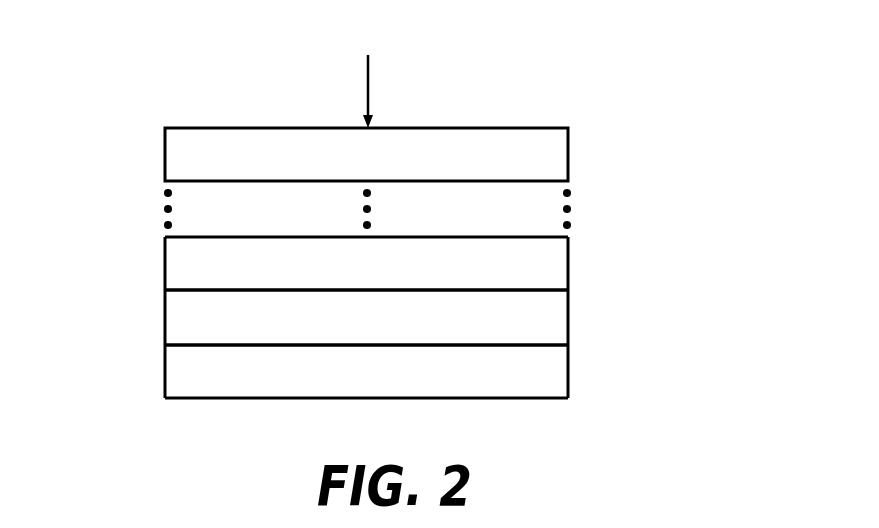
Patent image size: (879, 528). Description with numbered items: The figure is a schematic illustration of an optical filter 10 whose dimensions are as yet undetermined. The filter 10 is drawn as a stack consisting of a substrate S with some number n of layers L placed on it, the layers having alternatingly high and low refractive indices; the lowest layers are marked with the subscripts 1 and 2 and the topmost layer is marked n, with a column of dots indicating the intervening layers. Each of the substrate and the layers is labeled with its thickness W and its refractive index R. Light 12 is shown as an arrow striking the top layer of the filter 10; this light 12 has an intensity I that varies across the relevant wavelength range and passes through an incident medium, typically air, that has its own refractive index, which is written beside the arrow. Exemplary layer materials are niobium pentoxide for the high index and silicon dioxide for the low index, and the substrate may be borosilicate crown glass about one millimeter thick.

The filter 10 is at (402, 263).
The light 12 is at (367, 82).
The layer L1 1 is at (455, 317).
The layer L2 2 is at (455, 263).